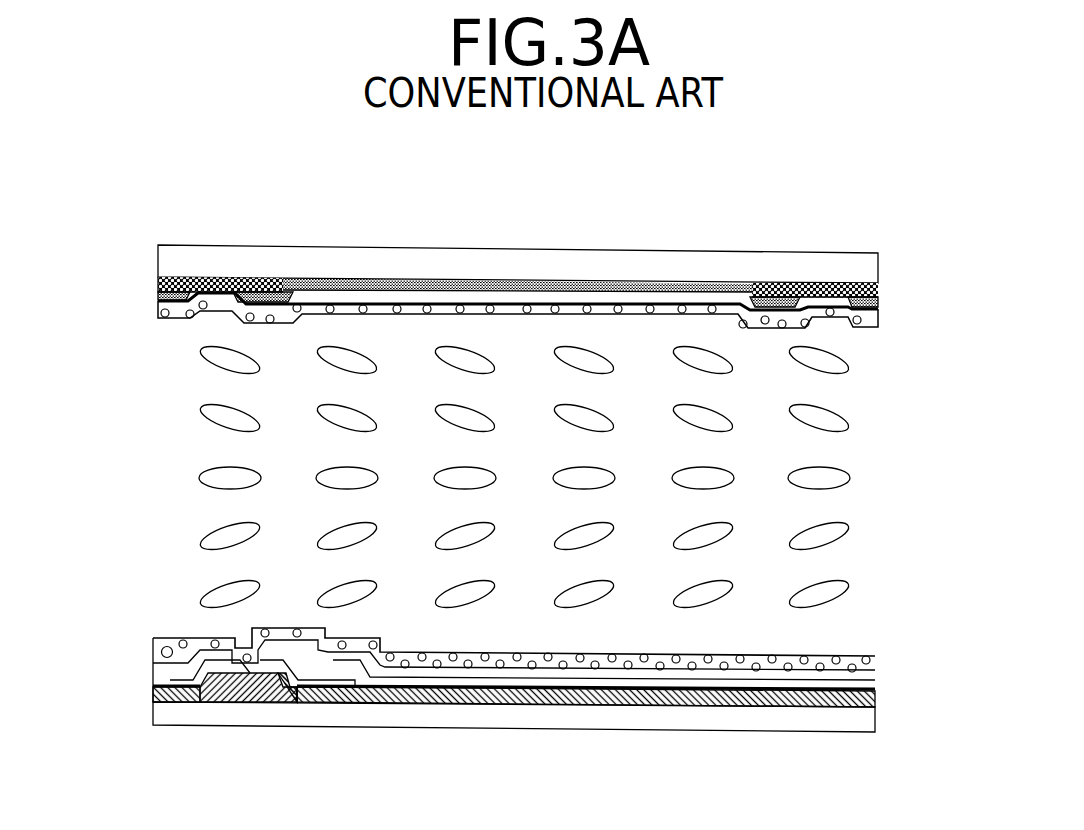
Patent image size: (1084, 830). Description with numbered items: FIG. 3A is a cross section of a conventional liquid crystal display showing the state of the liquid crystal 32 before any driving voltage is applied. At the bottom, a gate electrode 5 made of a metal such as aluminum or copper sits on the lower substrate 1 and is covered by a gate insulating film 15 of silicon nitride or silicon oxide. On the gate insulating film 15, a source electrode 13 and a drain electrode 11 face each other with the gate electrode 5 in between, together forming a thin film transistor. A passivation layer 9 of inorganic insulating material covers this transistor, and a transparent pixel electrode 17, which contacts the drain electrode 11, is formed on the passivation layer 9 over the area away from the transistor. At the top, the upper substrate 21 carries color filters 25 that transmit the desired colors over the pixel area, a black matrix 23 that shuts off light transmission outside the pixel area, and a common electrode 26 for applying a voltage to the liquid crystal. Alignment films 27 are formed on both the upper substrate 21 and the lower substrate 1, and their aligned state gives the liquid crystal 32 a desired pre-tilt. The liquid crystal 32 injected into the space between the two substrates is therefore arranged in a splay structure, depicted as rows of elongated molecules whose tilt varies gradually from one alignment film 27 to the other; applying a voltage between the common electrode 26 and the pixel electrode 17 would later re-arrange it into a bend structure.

The lower substrate 1 is at (840, 722).
The gate electrode 5 is at (234, 703).
The passivation layer 9 is at (874, 687).
The drain electrode 11 is at (297, 703).
The source electrode 13 is at (175, 683).
The gate insulating film 15 is at (876, 706).
The pixel electrode 17 is at (876, 672).
The upper substrate 21 is at (870, 253).
The black matrix 23 is at (880, 283).
The color filters 25 is at (880, 300).
The common electrode 26 is at (880, 308).
The alignment films 27 is at (880, 327).
The liquid crystal 32 is at (836, 478).